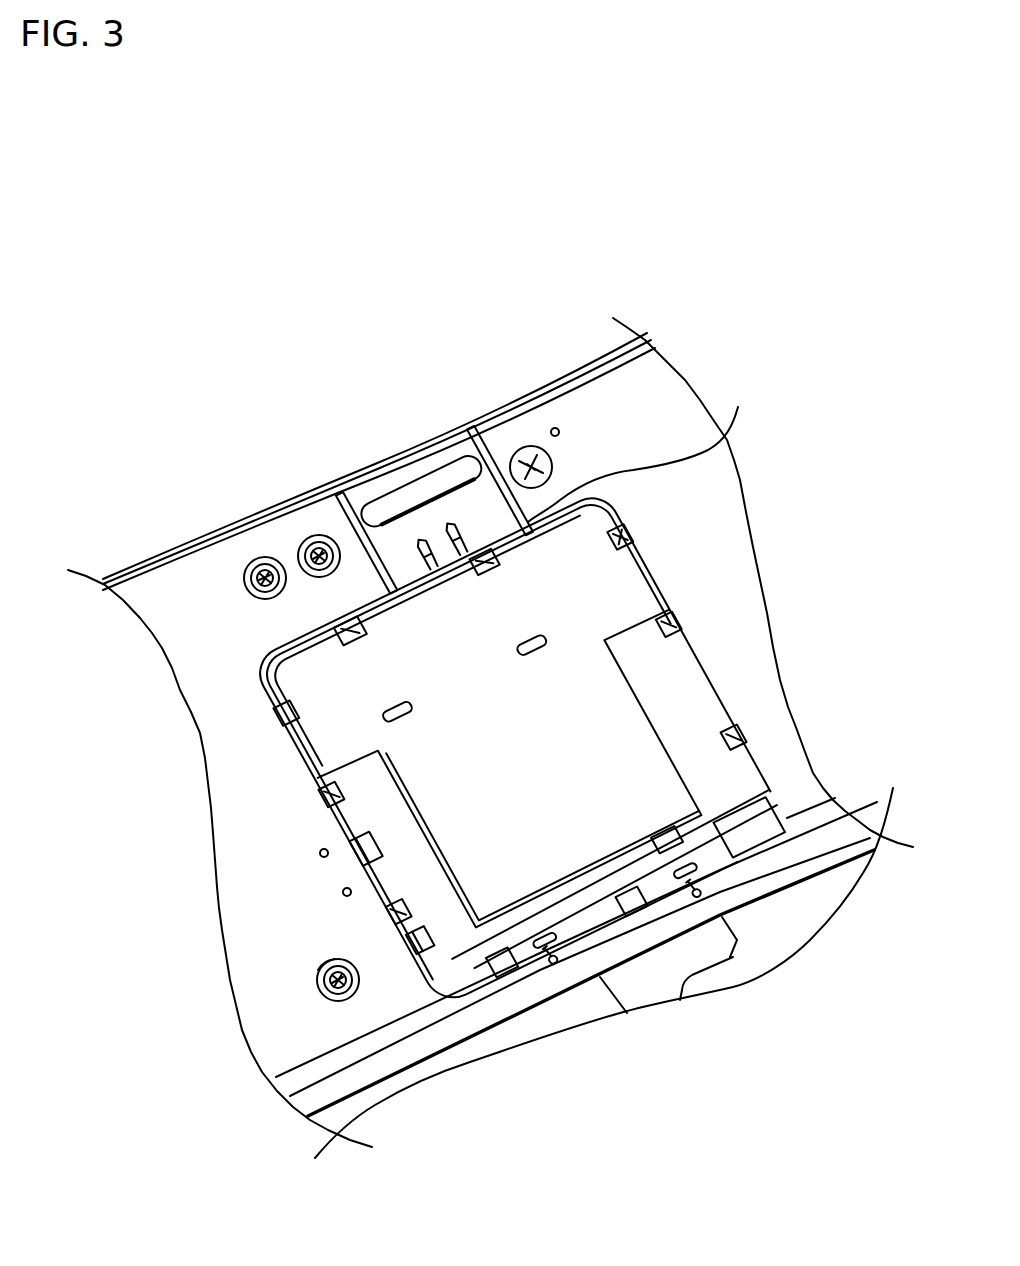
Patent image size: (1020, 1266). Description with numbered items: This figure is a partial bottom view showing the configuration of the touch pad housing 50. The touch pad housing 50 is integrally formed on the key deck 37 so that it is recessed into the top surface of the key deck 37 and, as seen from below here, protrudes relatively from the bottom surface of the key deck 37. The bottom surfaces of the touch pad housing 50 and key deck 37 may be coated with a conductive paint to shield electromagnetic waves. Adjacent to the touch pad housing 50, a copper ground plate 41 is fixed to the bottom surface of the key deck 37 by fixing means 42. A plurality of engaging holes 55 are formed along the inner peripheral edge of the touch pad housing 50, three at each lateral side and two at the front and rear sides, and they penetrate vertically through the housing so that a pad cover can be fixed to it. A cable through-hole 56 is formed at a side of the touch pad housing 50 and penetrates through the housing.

The key deck 37 is at (205, 598).
The copper ground plate 41 is at (597, 418).
The fixing means 42 is at (514, 462).
The touch pad housing 50 is at (553, 702).
The engaging holes 55 is at (350, 632).
The cable through-hole 56 is at (745, 827).